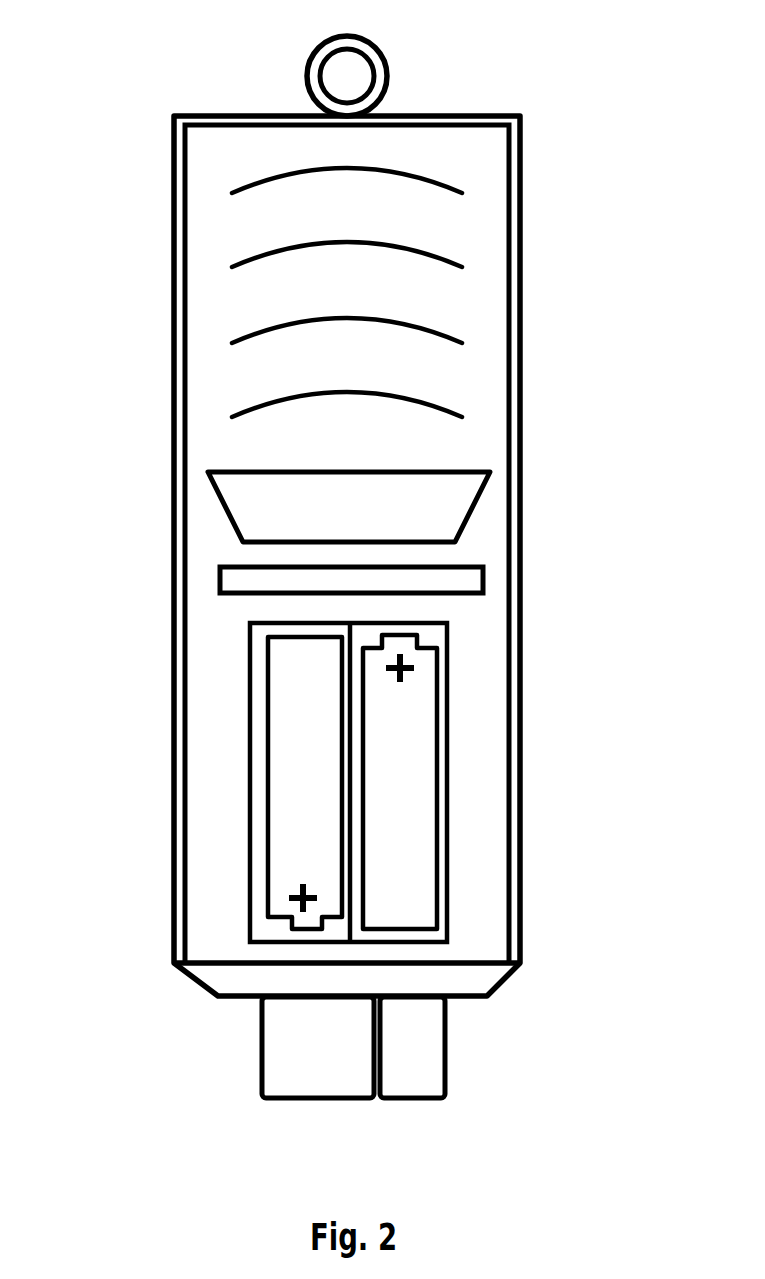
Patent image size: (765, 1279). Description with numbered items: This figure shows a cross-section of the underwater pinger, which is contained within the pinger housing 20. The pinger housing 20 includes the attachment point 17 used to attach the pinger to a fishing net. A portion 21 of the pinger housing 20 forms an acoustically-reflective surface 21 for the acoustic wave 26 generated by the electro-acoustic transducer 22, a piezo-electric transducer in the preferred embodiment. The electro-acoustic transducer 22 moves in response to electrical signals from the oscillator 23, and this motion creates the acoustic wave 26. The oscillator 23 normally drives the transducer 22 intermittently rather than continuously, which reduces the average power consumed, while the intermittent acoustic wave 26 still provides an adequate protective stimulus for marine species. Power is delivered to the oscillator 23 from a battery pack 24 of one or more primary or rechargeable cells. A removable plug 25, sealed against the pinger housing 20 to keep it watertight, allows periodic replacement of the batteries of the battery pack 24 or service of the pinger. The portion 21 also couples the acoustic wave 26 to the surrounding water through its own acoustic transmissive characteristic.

The attachment point 17 is at (377, 50).
The pinger housing 20 is at (172, 250).
The acoustically-reflective surface 21 is at (247, 115).
The electro-acoustic transducer 22 is at (248, 497).
The oscillator 23 is at (250, 582).
The battery pack 24 is at (302, 745).
The removable plug 25 is at (303, 1076).
The acoustic wave 26 is at (430, 322).